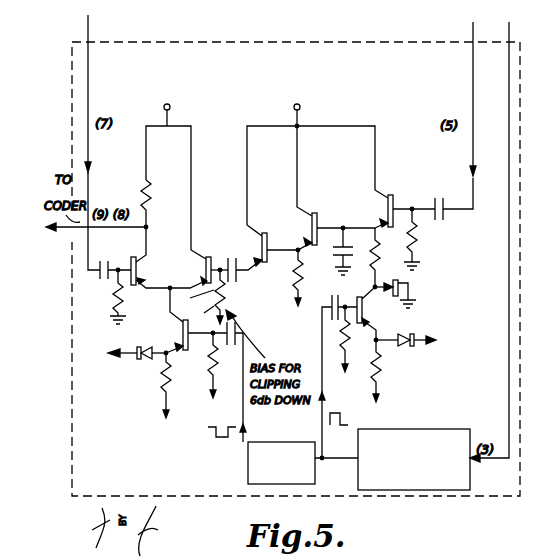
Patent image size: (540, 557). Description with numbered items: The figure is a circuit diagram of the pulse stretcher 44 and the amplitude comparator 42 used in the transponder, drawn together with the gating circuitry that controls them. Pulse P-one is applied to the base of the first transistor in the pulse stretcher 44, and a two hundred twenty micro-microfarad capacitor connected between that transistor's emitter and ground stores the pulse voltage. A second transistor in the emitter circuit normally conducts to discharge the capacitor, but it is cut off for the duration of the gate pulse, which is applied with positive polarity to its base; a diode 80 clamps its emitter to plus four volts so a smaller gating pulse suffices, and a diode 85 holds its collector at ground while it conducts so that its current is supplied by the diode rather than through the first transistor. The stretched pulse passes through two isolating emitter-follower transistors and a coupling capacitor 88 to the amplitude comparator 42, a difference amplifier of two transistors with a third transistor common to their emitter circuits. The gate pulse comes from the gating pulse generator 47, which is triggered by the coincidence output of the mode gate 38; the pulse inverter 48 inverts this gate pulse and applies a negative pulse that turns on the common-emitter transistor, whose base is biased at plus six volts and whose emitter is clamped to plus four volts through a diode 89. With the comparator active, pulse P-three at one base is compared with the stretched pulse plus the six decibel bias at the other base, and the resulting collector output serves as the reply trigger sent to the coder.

The amplitude comparator 42 is at (215, 90).
The pulse stretcher 44 is at (375, 90).
The coupling capacitor 88 is at (236, 257).
The diode 85 is at (405, 285).
The diode 89 is at (145, 360).
The diode 80 is at (412, 348).
The pulse inverter 48 is at (248, 476).
The gating pulse generator 47 is at (450, 428).
The mode gate 38 is at (514, 262).